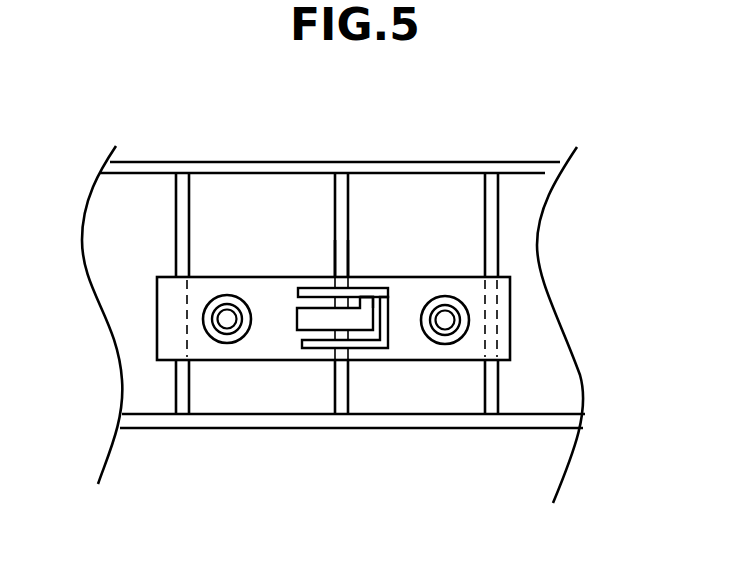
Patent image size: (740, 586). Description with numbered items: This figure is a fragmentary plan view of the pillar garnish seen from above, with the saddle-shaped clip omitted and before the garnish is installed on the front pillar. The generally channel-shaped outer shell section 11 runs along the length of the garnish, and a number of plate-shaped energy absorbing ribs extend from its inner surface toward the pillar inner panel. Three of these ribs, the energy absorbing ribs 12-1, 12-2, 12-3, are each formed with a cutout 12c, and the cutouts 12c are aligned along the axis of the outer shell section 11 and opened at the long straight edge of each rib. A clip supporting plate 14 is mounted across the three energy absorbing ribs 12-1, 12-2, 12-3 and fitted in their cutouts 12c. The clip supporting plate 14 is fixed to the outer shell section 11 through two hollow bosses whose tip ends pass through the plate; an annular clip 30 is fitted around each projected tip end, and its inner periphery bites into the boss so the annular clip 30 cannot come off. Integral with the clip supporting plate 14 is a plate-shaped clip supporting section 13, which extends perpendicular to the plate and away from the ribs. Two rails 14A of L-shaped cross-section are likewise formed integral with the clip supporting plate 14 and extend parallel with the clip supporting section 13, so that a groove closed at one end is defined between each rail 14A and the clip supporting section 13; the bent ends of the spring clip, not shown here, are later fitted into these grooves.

The outer shell section 11 is at (522, 162).
The energy absorbing rib 12-1 is at (176, 391).
The energy absorbing rib 12-2 is at (334, 395).
The energy absorbing rib 12-3 is at (484, 396).
The cutout 12c is at (350, 286).
The clip supporting section 13 is at (359, 288).
The clip supporting plate 14 is at (510, 311).
The rail 14A is at (310, 287).
The annular clip 30 is at (213, 295).